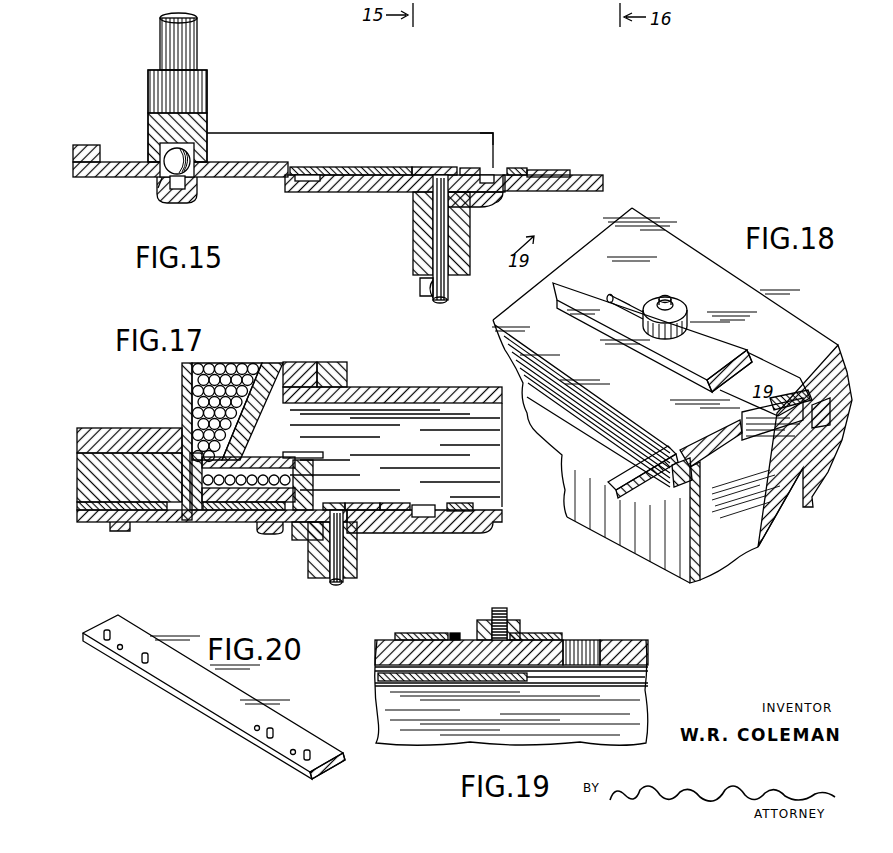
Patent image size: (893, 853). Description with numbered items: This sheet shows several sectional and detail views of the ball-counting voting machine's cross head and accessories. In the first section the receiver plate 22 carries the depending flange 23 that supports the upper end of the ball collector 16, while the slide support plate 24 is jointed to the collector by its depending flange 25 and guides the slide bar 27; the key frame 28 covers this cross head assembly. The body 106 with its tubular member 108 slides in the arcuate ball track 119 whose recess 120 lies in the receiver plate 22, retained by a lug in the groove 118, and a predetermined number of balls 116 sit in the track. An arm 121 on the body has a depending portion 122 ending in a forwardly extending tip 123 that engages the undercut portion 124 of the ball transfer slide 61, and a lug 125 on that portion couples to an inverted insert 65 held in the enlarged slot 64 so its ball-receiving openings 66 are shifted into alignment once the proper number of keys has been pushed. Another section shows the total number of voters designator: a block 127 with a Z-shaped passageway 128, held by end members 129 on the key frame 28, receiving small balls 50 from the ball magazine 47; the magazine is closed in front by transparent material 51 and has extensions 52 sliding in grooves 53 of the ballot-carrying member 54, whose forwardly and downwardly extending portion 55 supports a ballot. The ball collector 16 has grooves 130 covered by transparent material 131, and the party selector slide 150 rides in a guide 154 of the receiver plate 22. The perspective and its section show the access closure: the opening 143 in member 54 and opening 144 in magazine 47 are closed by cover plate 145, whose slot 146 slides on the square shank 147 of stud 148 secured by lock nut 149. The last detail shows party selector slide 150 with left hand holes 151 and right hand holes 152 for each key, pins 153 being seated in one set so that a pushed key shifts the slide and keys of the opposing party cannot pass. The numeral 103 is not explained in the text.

In FIG. 15, the ball collector 16 is at (449, 290).
In FIG. 17, the ball collector 16 is at (322, 584).
In FIG. 15, the receiver plate 22 is at (300, 193).
In FIG. 17, the receiver plate 22 is at (415, 535).
In FIG. 15, the depending flange 23 is at (414, 231).
In FIG. 17, the depending flange 23 is at (358, 575).
In FIG. 15, the slide support plate 24 is at (545, 185).
In FIG. 17, the slide support plate 24 is at (122, 528).
In FIG. 15, the depending flange 25 is at (466, 243).
In FIG. 17, the depending flange 25 is at (310, 568).
In FIG. 15, the slide bar 27 is at (486, 206).
In FIG. 17, the slide bar 27 is at (280, 538).
In FIG. 17, the key frame 28 is at (421, 387).
In FIG. 18, the key frame 28 is at (792, 528).
In FIG. 17, the ball magazine 47 is at (264, 366).
In FIG. 18, the ball magazine 47 is at (758, 550).
In FIG. 19, the ball magazine 47 is at (447, 682).
In FIG. 17, the small balls 50 is at (231, 369).
In FIG. 17, the transparent material 51 is at (183, 381).
In FIG. 18, the transparent material 51 is at (702, 578).
In FIG. 18, the extensions 52 is at (673, 486).
In FIG. 18, the grooves 53 is at (690, 456).
In FIG. 17, the ballot-carrying member 54 is at (352, 352).
In FIG. 18, the ballot-carrying member 54 is at (776, 298).
In FIG. 19, the ballot-carrying member 54 is at (641, 641).
In FIG. 18, the forwardly and downwardly extending portion 55 is at (614, 488).
In FIG. 15, the ball transfer slide 61 is at (570, 174).
In FIG. 17, the ball transfer slide 61 is at (400, 499).
In FIG. 15, the enlarged slot 64 is at (428, 166).
In FIG. 17, the enlarged slot 64 is at (363, 499).
In FIG. 17, the interchangeable inserts 65 is at (357, 525).
In FIG. 17, the ball-receiving openings 66 is at (336, 499).
In FIG. 17, the block 103 is at (83, 526).
In FIG. 15, the body 106 is at (148, 88).
In FIG. 15, the tubular member 108 is at (190, 40).
In FIG. 15, the balls 116 is at (163, 150).
In FIG. 15, the groove 118 is at (157, 180).
In FIG. 15, the ball track 119 is at (187, 183).
In FIG. 15, the recess 120 is at (166, 199).
In FIG. 15, the arm 121 is at (269, 145).
In FIG. 15, the depending portion 122 is at (493, 140).
In FIG. 15, the forwardly extending tip 123 is at (490, 177).
In FIG. 15, the undercut portion 124 is at (520, 172).
In FIG. 15, the lug 125 is at (463, 170).
In FIG. 17, the block 127 is at (295, 457).
In FIG. 17, the Z-shaped passageway 128 is at (300, 453).
In FIG. 17, the end members 129 is at (191, 526).
In FIG. 15, the grooves 130 is at (431, 301).
In FIG. 17, the grooves 130 is at (337, 586).
In FIG. 15, the transparent material 131 is at (418, 284).
In FIG. 18, the opening 143 is at (767, 367).
In FIG. 19, the opening 143 is at (585, 641).
In FIG. 18, the opening 144 is at (764, 435).
In FIG. 19, the opening 144 is at (553, 684).
In FIG. 18, the cover plate 145 is at (625, 256).
In FIG. 19, the cover plate 145 is at (410, 634).
In FIG. 18, the slot 146 is at (616, 298).
In FIG. 19, the slot 146 is at (455, 634).
In FIG. 19, the square shank 147 is at (528, 637).
In FIG. 18, the stud 148 is at (665, 296).
In FIG. 19, the stud 148 is at (495, 616).
In FIG. 18, the lock nut 149 is at (686, 306).
In FIG. 19, the lock nut 149 is at (524, 606).
In FIG. 15, the party selector slide 150 is at (322, 163).
In FIG. 17, the party selector slide 150 is at (494, 497).
In FIG. 20, the party selector slide 150 is at (128, 627).
In FIG. 20, the left hand holes 151 is at (105, 643).
In FIG. 20, the right hand holes 152 is at (157, 670).
In FIG. 20, the pins 153 is at (141, 663).
In FIG. 15, the guide 154 is at (292, 180).
In FIG. 17, the guide 154 is at (452, 497).